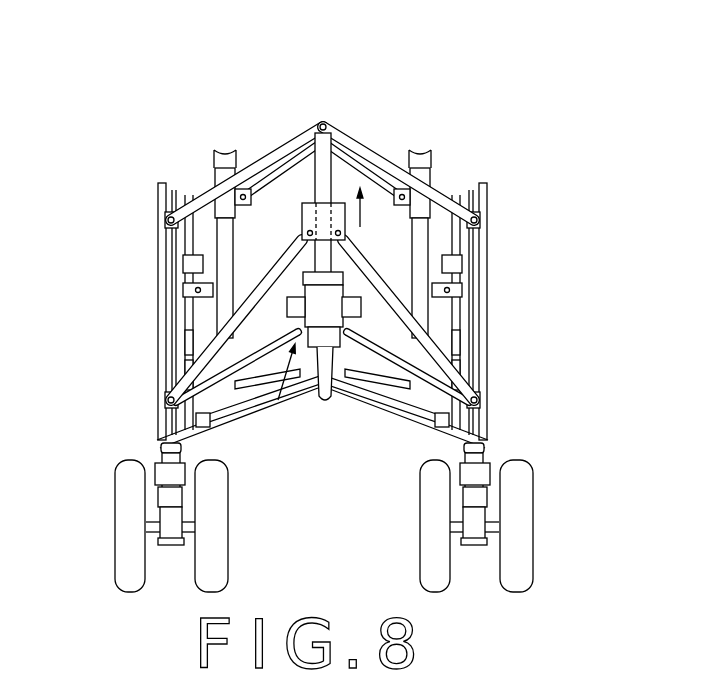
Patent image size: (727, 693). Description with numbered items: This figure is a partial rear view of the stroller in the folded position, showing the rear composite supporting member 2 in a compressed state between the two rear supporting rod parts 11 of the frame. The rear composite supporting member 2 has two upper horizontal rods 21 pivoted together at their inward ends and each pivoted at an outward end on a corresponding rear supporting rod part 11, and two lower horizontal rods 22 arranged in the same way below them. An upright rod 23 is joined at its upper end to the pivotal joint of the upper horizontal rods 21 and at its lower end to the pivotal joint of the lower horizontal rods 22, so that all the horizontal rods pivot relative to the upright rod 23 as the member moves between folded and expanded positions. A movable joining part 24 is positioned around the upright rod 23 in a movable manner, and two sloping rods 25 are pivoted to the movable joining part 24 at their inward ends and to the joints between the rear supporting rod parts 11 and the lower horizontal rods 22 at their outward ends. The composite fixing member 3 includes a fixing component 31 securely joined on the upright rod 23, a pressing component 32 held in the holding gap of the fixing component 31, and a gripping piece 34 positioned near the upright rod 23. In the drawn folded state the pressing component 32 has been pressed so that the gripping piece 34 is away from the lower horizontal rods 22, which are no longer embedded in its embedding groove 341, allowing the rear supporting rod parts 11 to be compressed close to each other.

The rear composite supporting member 2 is at (357, 120).
The composite fixing member 3 is at (272, 325).
The rear supporting rod part 11 is at (162, 265).
The upper horizontal rod 21 is at (263, 156).
The lower horizontal rod 22 is at (162, 413).
The upright rod 23 is at (323, 178).
The movable joining part 24 is at (346, 228).
The sloping rod 25 is at (237, 322).
The fixing component 31 is at (325, 350).
The pressing component 32 is at (348, 330).
The gripping piece 34 is at (262, 345).
The embedding groove 341 is at (335, 300).